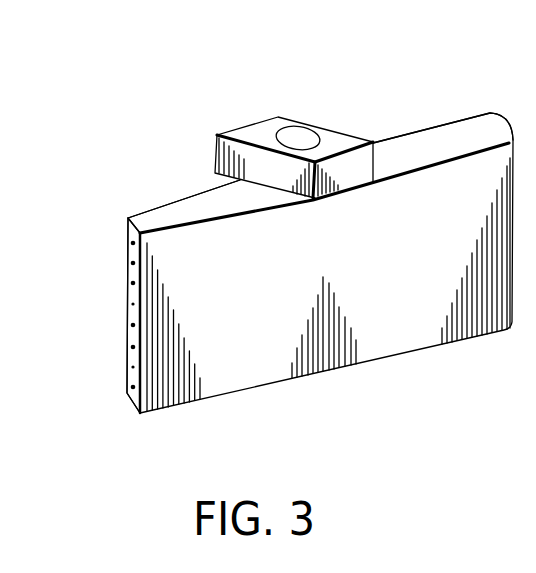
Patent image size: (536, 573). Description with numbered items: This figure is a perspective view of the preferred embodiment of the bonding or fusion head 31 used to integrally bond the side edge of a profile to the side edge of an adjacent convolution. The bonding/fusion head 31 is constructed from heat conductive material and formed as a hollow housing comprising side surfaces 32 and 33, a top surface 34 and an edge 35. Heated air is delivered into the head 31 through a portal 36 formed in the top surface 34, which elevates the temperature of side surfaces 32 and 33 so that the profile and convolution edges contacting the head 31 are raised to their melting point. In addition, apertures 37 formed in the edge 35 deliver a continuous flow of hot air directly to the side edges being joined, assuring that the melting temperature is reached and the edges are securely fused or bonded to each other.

The bonding/fusion head 31 is at (395, 328).
The side surface 32 is at (203, 367).
The side surface 33 is at (177, 200).
The top surface 34 is at (462, 140).
The edge 35 is at (123, 395).
The portal 36 is at (305, 127).
The apertures 37 is at (127, 365).